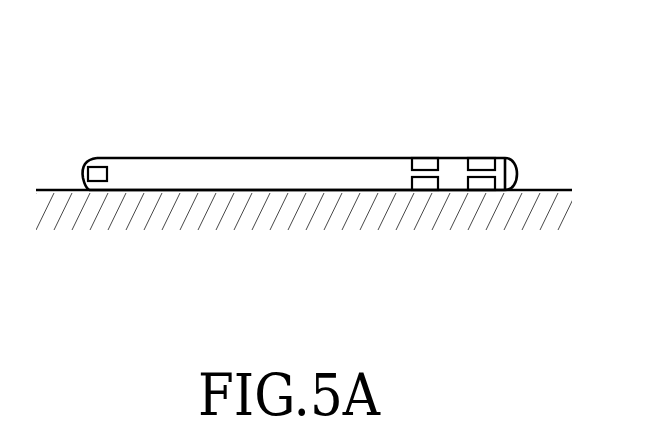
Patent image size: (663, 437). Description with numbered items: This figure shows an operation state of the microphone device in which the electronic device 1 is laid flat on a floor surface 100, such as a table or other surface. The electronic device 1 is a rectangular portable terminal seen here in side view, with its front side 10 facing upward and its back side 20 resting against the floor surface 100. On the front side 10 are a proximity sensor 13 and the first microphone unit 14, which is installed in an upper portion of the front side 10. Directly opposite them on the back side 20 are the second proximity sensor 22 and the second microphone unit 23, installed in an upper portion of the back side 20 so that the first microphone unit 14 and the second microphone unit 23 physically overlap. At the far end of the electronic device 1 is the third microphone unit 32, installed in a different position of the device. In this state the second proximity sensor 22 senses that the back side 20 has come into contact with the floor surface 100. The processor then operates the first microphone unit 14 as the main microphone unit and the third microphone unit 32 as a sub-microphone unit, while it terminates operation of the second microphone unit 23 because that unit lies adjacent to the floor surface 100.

The electronic device 1 is at (540, 98).
The front side 10 is at (290, 148).
The back side 20 is at (290, 202).
The proximity sensor 13 is at (419, 163).
The first microphone unit 14 is at (480, 163).
The second proximity sensor 22 is at (423, 186).
The second microphone unit 23 is at (482, 186).
The third microphone unit 32 is at (90, 172).
The floor surface 100 is at (552, 190).